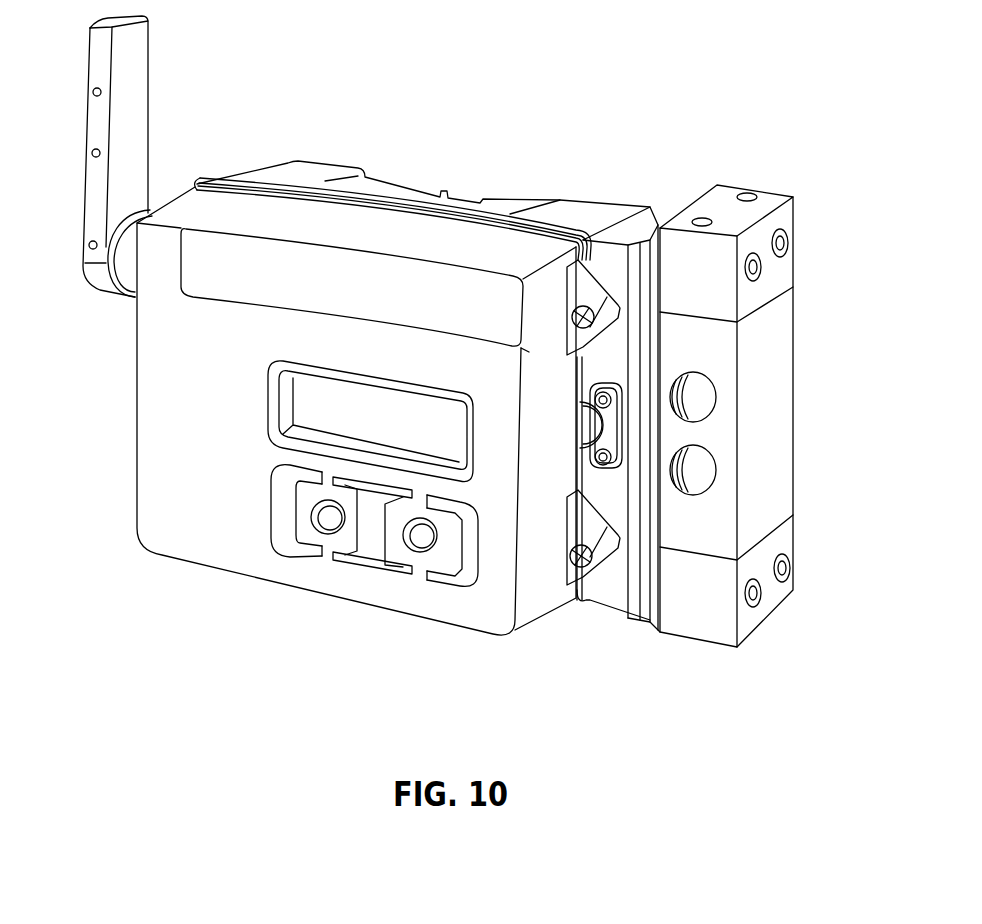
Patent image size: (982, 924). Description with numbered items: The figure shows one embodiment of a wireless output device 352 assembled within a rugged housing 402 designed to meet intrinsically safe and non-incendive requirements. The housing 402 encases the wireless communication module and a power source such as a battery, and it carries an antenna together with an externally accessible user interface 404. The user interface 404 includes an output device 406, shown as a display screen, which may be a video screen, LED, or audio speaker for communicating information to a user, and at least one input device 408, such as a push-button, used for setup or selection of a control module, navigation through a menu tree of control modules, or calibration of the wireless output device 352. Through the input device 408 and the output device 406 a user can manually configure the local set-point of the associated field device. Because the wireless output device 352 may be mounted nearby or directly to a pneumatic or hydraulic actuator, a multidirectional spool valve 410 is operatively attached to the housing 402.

The wireless output device 352 is at (520, 78).
The housing 402 is at (328, 158).
The user interface 404 is at (208, 592).
The output device 406 is at (338, 415).
The input device 408 is at (327, 518).
The multidirectional spool valve 410 is at (770, 192).